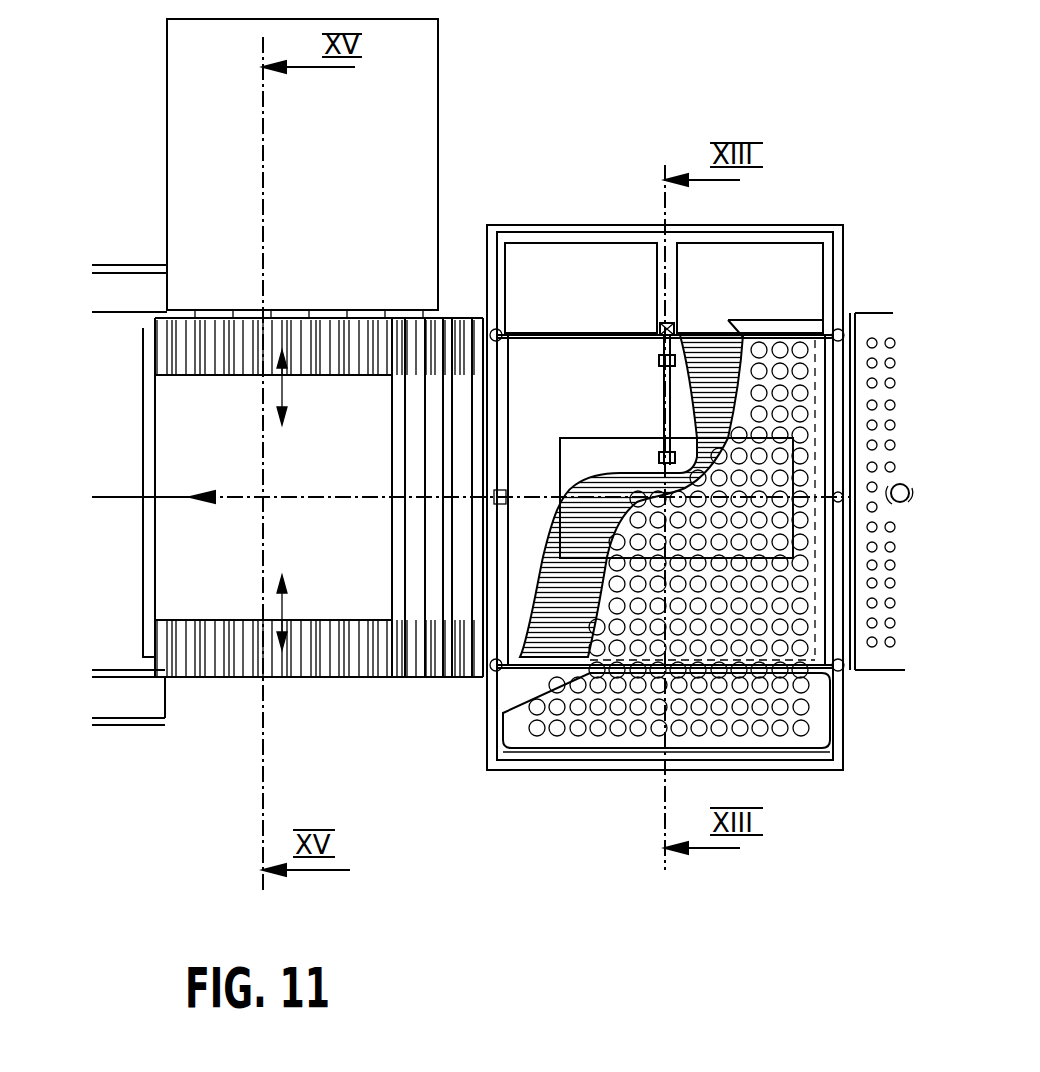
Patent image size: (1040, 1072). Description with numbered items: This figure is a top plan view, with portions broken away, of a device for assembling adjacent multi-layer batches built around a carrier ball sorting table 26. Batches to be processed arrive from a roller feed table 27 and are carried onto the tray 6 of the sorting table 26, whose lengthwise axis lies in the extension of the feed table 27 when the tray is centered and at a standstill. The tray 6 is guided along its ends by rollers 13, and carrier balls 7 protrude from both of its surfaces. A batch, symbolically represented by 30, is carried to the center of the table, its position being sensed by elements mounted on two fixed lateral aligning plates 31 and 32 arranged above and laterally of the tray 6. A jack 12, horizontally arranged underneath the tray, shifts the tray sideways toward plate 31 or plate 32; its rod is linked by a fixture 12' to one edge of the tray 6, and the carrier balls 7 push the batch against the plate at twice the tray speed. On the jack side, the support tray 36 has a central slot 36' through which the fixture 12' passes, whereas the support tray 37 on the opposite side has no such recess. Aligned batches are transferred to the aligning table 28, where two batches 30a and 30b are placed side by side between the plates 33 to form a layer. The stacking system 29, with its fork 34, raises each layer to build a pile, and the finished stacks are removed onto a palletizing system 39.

The tray 6 is at (558, 748).
The carrier balls 7 is at (617, 727).
The jack 12 is at (621, 400).
The fixture 12' is at (699, 296).
The rollers 13 is at (497, 232).
The sorting table 26 is at (588, 225).
The roller feed table 27 is at (885, 690).
The aligning table 28 is at (442, 692).
The stacking system 29 is at (379, 170).
The batch 30 is at (604, 425).
The first batch of a layer 30a is at (372, 456).
The second batch of a layer 30b is at (372, 575).
The lateral aligning plate 31 is at (777, 320).
The lateral aligning plate 32 is at (835, 700).
The plates 33 is at (455, 340).
The fork 34 is at (353, 347).
The support tray 36 is at (725, 221).
The slot or recess 36' is at (581, 288).
The support tray 37 is at (488, 770).
The palletizing system 39 is at (145, 735).